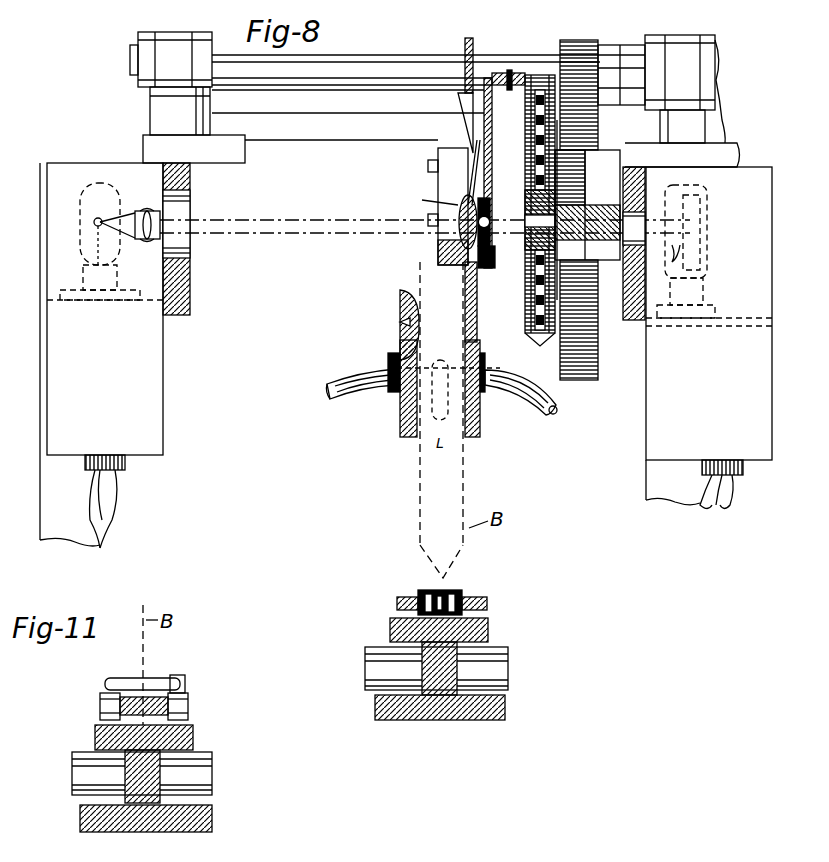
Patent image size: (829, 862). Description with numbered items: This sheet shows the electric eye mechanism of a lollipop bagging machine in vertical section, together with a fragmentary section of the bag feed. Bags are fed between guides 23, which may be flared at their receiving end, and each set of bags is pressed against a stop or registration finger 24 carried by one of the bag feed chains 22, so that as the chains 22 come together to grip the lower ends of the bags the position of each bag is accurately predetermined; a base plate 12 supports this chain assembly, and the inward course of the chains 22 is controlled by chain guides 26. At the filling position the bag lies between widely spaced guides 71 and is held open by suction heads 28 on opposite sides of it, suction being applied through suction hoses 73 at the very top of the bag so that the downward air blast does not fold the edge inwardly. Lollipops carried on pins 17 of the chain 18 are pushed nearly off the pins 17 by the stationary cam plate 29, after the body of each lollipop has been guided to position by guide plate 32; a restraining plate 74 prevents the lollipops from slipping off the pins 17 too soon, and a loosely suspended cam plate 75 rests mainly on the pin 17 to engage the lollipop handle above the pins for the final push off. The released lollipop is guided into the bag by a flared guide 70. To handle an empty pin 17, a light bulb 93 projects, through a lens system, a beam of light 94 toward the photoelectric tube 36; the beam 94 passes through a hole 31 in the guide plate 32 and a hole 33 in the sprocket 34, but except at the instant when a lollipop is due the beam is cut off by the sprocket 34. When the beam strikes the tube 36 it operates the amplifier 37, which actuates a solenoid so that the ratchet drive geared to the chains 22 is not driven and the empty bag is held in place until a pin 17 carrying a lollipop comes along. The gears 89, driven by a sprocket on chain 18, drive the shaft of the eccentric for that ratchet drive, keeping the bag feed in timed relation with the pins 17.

In FIG. 8, the bags 12 is at (380, 597).
In FIG. 8, the pin 17 is at (506, 73).
In FIG. 8, the chain 18 is at (540, 75).
In FIG. 8, the chains 22 is at (431, 591).
In FIG. 11, the chains 22 is at (100, 705).
In FIG. 11, the guides 23 is at (100, 715).
In FIG. 11, the stop finger 24 is at (156, 686).
In FIG. 8, the chain guides 26 is at (398, 600).
In FIG. 8, the suction heads 28 is at (482, 355).
In FIG. 8, the stationary cam plate 29 is at (492, 108).
In FIG. 8, the hole 31 is at (492, 218).
In FIG. 8, the guide plate 32 is at (484, 268).
In FIG. 8, the hole 33 is at (516, 243).
In FIG. 8, the sprocket 34 is at (538, 186).
In FIG. 8, the photoelectric tube 36 is at (708, 205).
In FIG. 8, the amplifier 37 is at (748, 462).
In FIG. 8, the flared guide 70 is at (413, 296).
In FIG. 8, the guides 71 is at (403, 430).
In FIG. 8, the suction hoses 73 is at (361, 368).
In FIG. 8, the restraining plate 74 is at (465, 47).
In FIG. 8, the cam plate 75 is at (511, 70).
In FIG. 8, the gears 89 is at (600, 108).
In FIG. 8, the light bulb 93 is at (107, 176).
In FIG. 8, the beam of light 94 is at (288, 224).